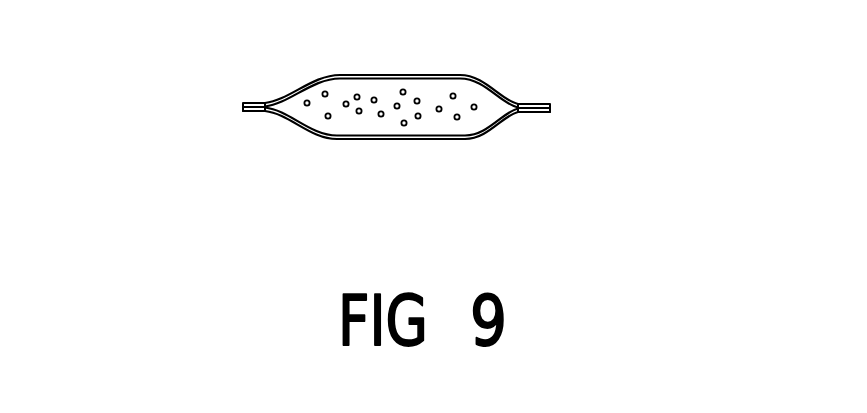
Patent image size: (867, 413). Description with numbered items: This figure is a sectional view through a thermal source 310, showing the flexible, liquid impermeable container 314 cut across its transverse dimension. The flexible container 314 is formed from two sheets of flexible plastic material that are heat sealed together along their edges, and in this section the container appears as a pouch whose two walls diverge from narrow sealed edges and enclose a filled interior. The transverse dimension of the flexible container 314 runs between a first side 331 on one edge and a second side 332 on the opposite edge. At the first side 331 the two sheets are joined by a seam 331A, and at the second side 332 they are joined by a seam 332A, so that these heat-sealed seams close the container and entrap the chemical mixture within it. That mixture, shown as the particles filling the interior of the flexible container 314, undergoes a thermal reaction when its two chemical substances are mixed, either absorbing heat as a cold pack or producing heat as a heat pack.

The thermal source 310 is at (534, 185).
The flexible container 314 is at (345, 124).
The first side 331 is at (548, 104).
The seam 331A is at (548, 112).
The second side 332 is at (245, 102).
The seam 332A is at (245, 112).